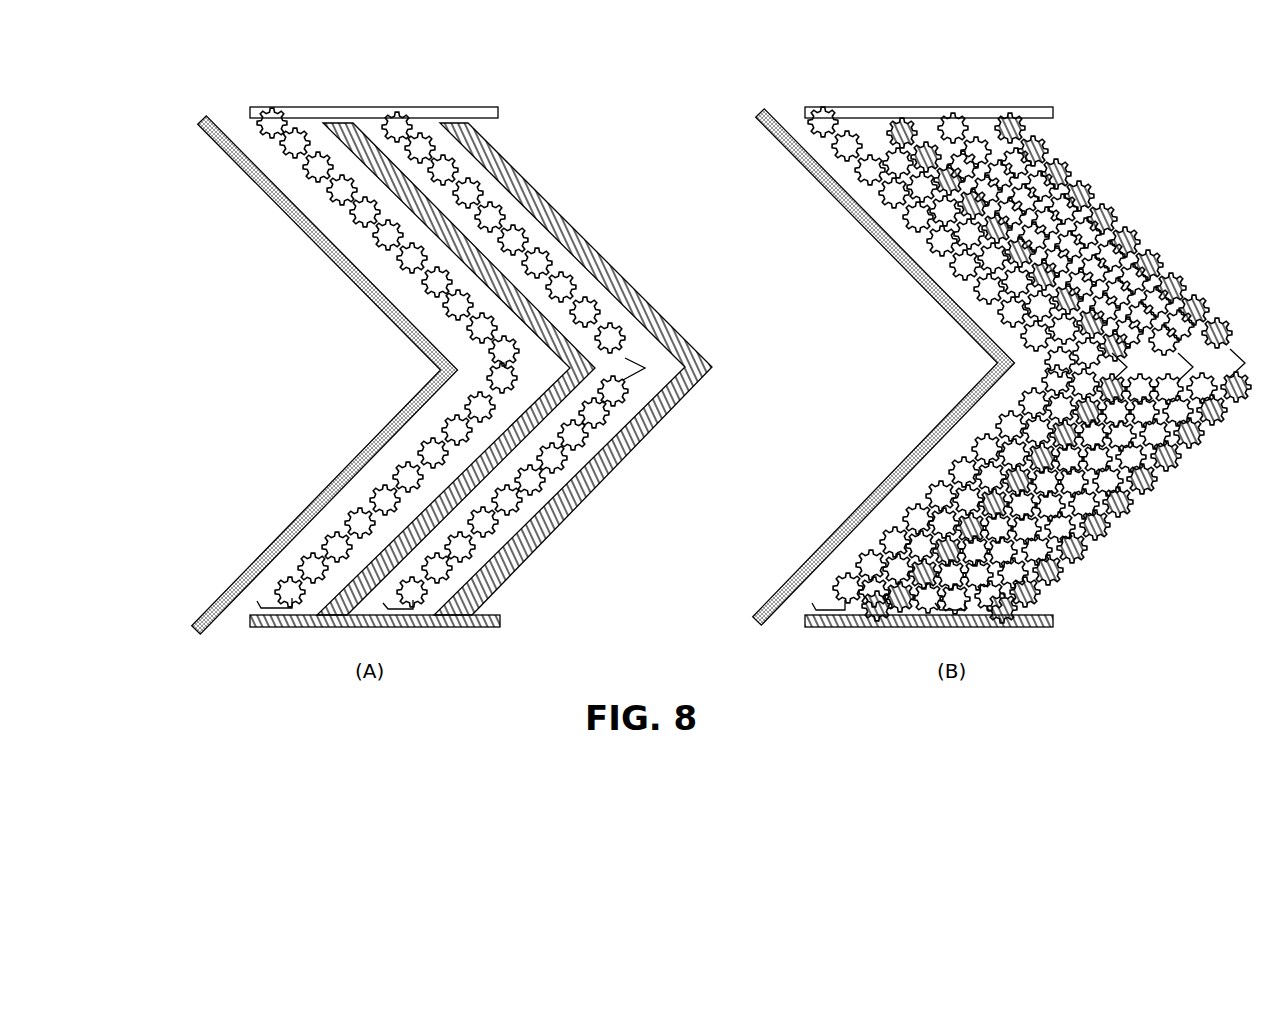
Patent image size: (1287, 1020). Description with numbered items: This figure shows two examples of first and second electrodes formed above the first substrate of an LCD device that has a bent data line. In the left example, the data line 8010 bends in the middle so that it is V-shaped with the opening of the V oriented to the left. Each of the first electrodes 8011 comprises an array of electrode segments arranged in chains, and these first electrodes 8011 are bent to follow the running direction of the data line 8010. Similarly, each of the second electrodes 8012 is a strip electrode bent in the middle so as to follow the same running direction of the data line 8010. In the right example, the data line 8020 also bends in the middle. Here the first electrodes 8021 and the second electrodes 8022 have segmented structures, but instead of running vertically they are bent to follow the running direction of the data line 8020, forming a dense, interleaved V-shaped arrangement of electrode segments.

The data line 8010 is at (320, 255).
The first electrodes 8011 is at (278, 112).
The second electrodes 8012 is at (490, 128).
The data line 8020 is at (880, 254).
The first electrodes 8021 is at (853, 130).
The second electrodes 8022 is at (1048, 148).